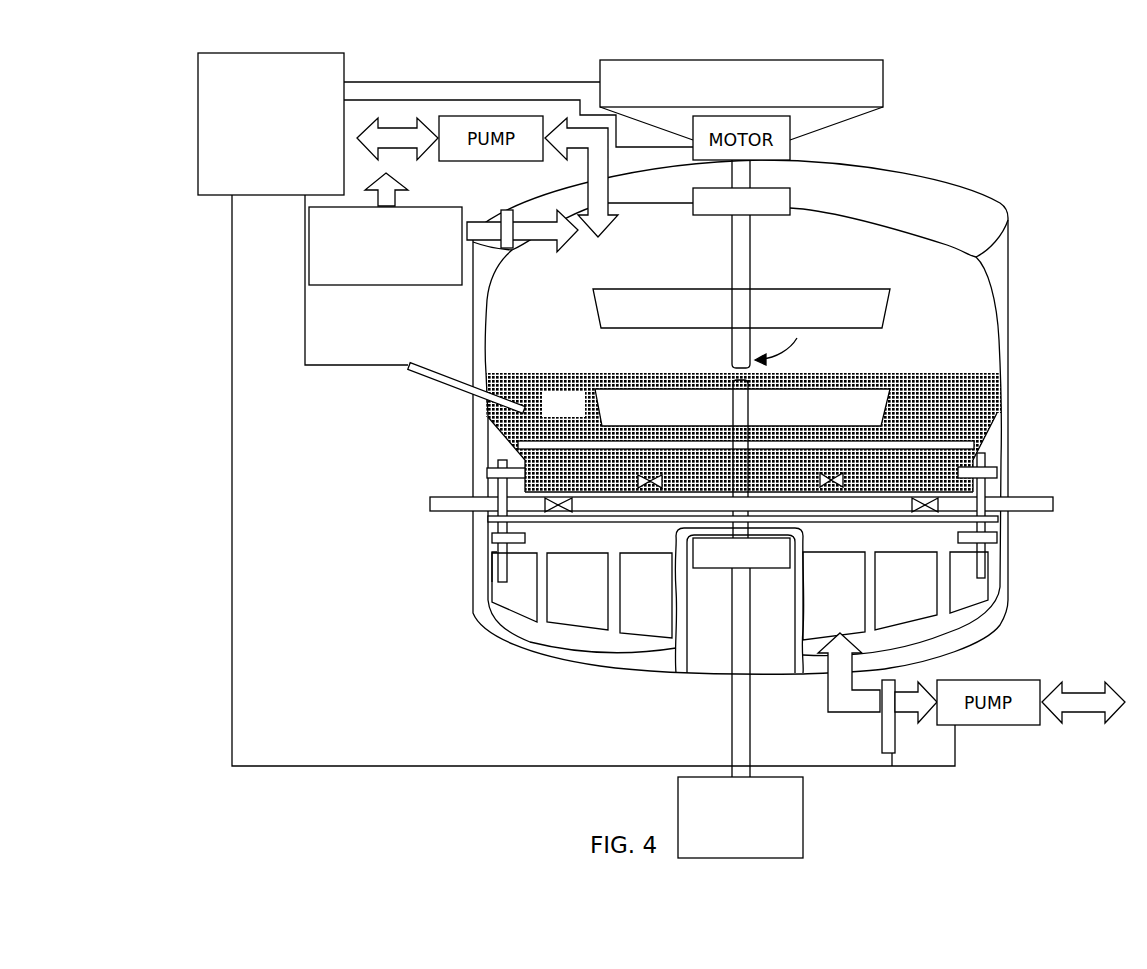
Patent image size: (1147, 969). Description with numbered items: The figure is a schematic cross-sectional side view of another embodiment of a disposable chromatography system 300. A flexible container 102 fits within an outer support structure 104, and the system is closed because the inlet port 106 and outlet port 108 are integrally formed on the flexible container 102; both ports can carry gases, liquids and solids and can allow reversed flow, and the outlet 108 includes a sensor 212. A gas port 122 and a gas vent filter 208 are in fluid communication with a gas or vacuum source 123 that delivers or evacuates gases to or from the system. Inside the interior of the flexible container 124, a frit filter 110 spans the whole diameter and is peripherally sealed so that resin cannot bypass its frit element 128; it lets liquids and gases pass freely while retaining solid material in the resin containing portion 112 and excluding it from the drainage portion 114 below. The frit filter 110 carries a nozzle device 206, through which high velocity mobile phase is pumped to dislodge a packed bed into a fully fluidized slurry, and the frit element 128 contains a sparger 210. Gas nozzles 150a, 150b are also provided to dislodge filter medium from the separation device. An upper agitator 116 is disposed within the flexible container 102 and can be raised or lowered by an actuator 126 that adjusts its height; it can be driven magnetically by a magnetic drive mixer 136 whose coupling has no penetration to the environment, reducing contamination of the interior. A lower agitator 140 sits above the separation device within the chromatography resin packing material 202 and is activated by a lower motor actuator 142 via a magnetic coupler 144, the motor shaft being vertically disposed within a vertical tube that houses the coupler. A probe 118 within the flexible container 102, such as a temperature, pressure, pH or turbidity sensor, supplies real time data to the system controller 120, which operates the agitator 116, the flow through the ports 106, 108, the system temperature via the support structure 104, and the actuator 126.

The disposable chromatography system 300 is at (1040, 84).
The flexible container 102 is at (947, 245).
The support structure 104 is at (1010, 250).
The inlet port 106 is at (580, 135).
The outlet port 108 is at (828, 702).
The frit filter 110 is at (924, 471).
The resin containing portion 112 is at (952, 415).
The drainage portion 114 is at (924, 546).
The upper agitator 116 is at (836, 316).
The probe 118 is at (447, 382).
The system controller 120 is at (285, 175).
The gas port 122 is at (490, 232).
The gas or vacuum source 123 is at (400, 278).
The interior of the flexible container 124 is at (825, 269).
The actuator 126 is at (756, 93).
The frit element 128 is at (487, 492).
The magnetic drive mixer 136 is at (802, 188).
The lower agitator 140 is at (835, 415).
The lower motor actuator 142 is at (755, 853).
The magnetic coupler 144 is at (715, 578).
The gas nozzle 150a is at (548, 505).
The gas nozzle 150b is at (940, 507).
The chromatography resin packing material 202 is at (578, 415).
The nozzle device 206 is at (640, 484).
The gas vent filter 208 is at (508, 212).
The sparger 210 is at (818, 482).
The sensor 212 is at (882, 735).